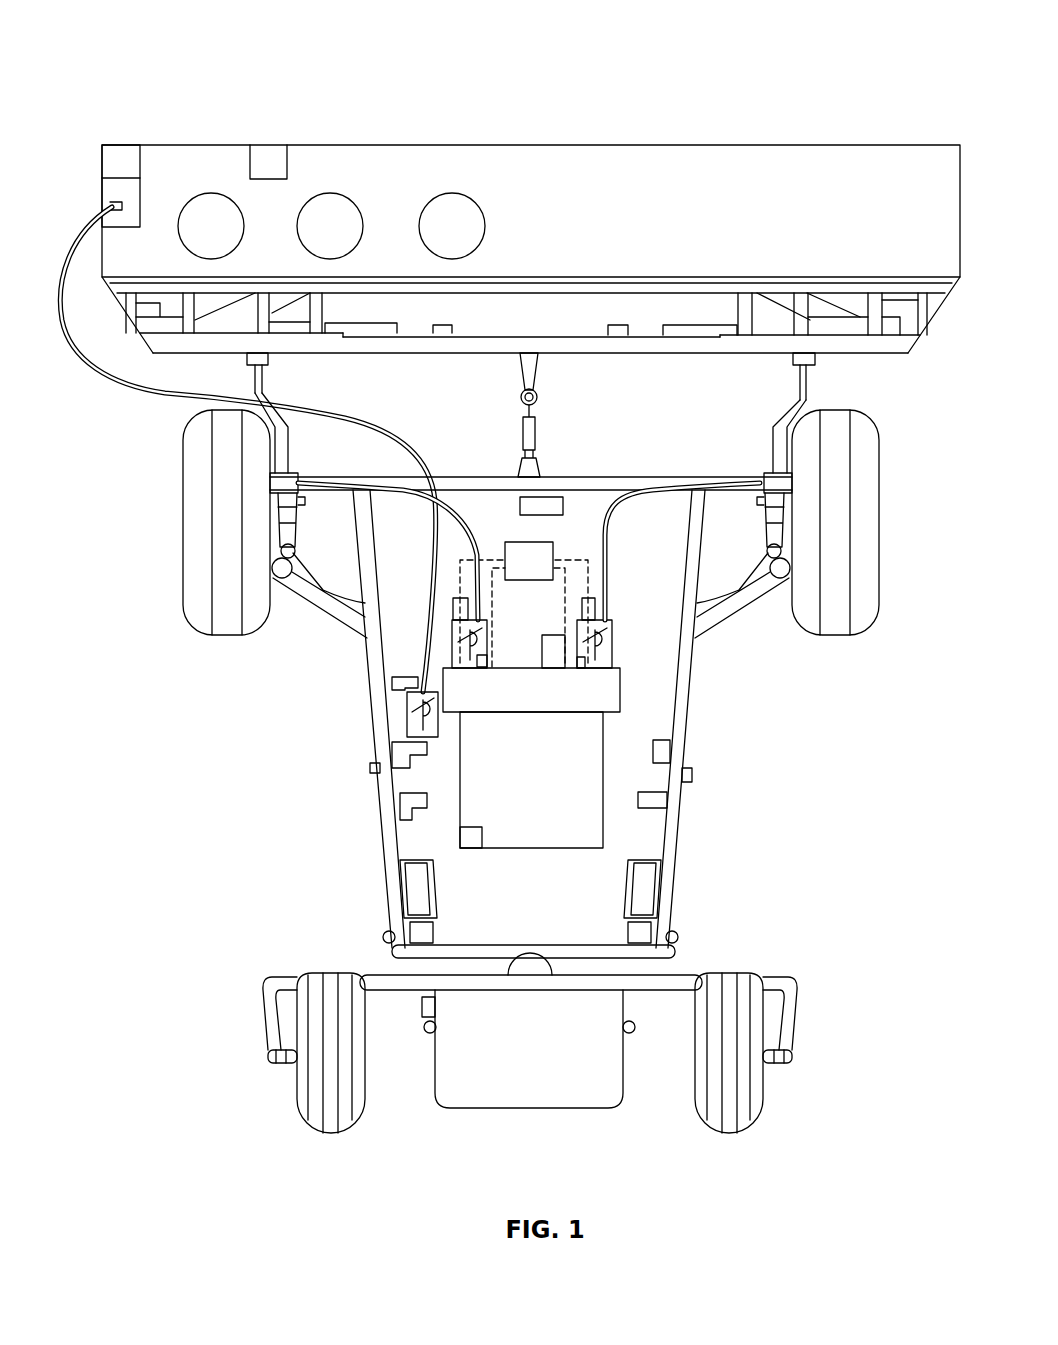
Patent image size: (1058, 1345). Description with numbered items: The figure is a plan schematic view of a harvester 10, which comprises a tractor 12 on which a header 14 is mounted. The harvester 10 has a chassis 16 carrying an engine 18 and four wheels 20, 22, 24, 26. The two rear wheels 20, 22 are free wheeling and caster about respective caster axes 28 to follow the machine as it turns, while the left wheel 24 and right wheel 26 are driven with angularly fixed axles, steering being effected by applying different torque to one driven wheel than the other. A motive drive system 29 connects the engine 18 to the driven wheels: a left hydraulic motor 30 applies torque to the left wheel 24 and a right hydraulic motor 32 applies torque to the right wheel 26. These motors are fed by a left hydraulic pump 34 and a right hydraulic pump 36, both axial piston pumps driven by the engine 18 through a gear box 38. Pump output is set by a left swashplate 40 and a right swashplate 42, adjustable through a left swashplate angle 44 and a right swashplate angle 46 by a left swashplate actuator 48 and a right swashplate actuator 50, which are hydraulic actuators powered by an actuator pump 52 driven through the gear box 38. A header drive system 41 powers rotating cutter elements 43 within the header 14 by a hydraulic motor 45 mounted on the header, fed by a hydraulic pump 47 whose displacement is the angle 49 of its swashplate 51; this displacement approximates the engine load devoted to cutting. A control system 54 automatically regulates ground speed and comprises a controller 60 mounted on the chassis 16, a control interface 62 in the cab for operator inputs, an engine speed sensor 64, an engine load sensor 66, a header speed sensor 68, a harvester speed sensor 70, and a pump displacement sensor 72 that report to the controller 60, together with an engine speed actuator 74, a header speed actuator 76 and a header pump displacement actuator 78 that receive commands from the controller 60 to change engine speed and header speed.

The harvester 10 is at (875, 47).
The tractor 12 is at (387, 823).
The header 14 is at (907, 145).
The chassis 16 is at (677, 837).
The engine 18 is at (534, 838).
The wheel 20 is at (330, 1133).
The wheel 22 is at (728, 1133).
The left wheel 24 is at (222, 622).
The right wheel 26 is at (836, 622).
The caster axis 28 is at (375, 975).
The motive drive system 29 is at (631, 470).
The left hydraulic motor 30 is at (292, 473).
The right hydraulic motor 32 is at (768, 471).
The left hydraulic pump 34 is at (452, 650).
The right hydraulic pump 36 is at (612, 640).
The gear box 38 is at (620, 702).
The left swashplate 40 is at (460, 636).
The header drive system 41 is at (116, 392).
The right swashplate 42 is at (607, 630).
The rotating cutter elements 43 is at (455, 213).
The left swashplate angle 44 is at (468, 630).
The hydraulic motor 45 is at (110, 192).
The right swashplate angle 46 is at (612, 644).
The hydraulic pump 47 is at (408, 730).
The left swashplate actuator 48 is at (453, 610).
The swashplate angle 49 is at (435, 737).
The right swashplate actuator 50 is at (582, 608).
The swashplate 51 is at (407, 700).
The actuator pump 52 is at (553, 662).
The control system 54 is at (575, 508).
The controller 60 is at (515, 550).
The control interface 62 is at (548, 502).
The engine speed sensor 64 is at (405, 872).
The engine load sensor 66 is at (433, 930).
The header speed sensor 68 is at (272, 150).
The harvester speed sensor 70 is at (581, 665).
The pump displacement sensor 72 is at (390, 683).
The engine speed actuator 74 is at (473, 848).
The header speed actuator 76 is at (118, 157).
The header pump displacement actuator 78 is at (397, 747).